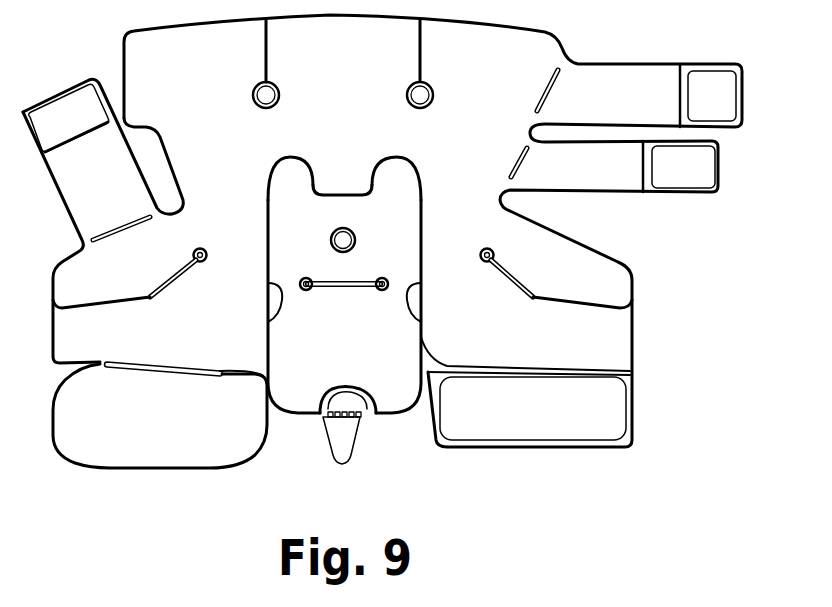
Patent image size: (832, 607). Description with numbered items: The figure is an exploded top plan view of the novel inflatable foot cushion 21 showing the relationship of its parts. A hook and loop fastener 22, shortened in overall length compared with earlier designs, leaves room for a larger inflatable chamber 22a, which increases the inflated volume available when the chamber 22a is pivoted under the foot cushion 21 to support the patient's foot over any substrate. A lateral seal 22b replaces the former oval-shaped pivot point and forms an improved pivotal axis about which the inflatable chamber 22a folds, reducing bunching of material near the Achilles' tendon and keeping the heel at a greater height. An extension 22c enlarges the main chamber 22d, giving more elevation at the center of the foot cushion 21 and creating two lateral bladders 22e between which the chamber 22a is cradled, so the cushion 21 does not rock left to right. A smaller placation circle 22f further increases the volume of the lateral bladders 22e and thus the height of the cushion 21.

The inflatable foot cushion 21 is at (712, 320).
The hook and loop fastener 22 is at (339, 442).
The inflatable chamber 22a is at (365, 367).
The lateral seal 22b is at (345, 283).
The extension 22c is at (362, 187).
The main chamber 22d is at (368, 107).
The lateral bladders 22e is at (291, 183).
The placation circle 22f is at (352, 231).